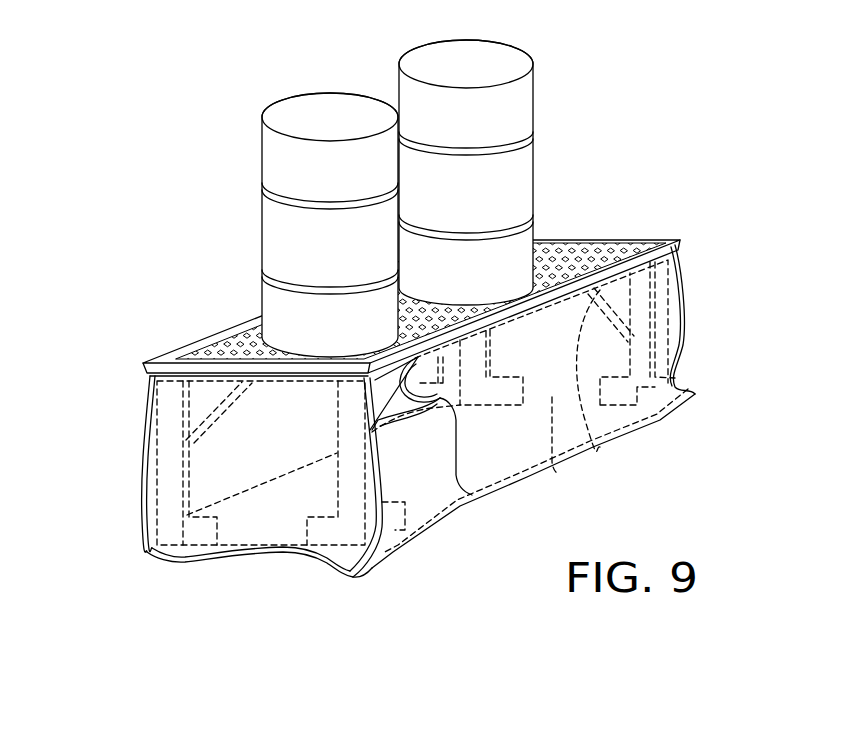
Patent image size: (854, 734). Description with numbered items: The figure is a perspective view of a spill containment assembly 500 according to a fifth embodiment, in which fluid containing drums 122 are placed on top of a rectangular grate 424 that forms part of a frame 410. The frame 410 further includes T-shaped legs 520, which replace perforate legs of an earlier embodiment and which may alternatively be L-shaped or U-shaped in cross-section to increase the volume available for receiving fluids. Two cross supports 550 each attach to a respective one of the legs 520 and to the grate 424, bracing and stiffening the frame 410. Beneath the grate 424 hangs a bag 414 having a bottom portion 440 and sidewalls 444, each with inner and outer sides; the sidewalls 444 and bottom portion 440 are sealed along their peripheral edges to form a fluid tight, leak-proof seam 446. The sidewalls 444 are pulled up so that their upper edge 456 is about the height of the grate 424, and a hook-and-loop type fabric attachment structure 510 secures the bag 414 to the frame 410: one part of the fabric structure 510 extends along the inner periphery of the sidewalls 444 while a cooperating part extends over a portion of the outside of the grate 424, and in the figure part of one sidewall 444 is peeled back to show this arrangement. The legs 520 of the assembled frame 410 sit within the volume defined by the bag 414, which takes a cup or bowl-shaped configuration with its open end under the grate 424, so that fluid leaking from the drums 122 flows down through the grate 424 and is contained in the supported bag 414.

The fluid containing drums 122 is at (327, 92).
The frame 410 is at (592, 222).
The spill containment assembly 500 is at (665, 216).
The grate 424 is at (200, 345).
The bag 414 is at (688, 336).
The seam 446 is at (686, 355).
The sidewalls 444 is at (166, 417).
The upper edge of the sidewalls 456 is at (302, 377).
The cross supports 550 is at (198, 440).
The T-shaped legs 520 is at (150, 503).
The hook-and-loop type fabric attachment structure 510 is at (472, 495).
The bottom portion 440 is at (274, 560).